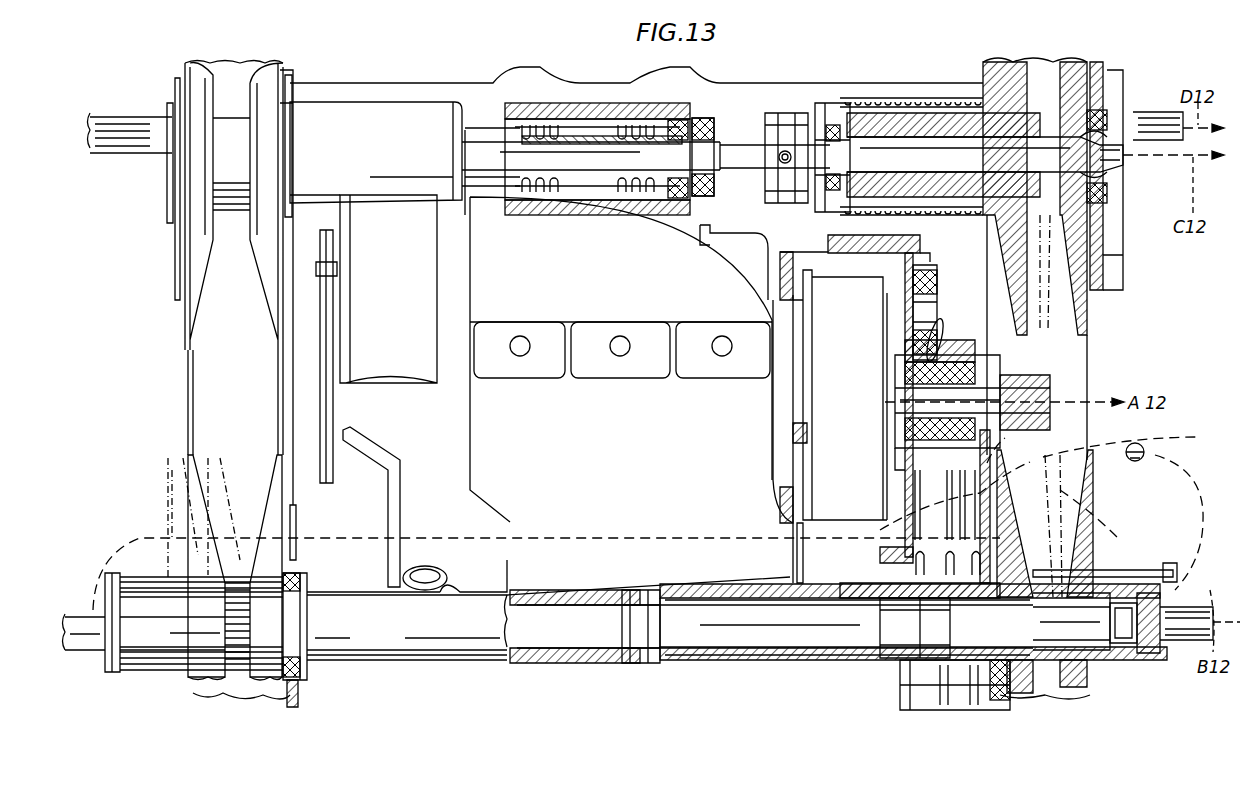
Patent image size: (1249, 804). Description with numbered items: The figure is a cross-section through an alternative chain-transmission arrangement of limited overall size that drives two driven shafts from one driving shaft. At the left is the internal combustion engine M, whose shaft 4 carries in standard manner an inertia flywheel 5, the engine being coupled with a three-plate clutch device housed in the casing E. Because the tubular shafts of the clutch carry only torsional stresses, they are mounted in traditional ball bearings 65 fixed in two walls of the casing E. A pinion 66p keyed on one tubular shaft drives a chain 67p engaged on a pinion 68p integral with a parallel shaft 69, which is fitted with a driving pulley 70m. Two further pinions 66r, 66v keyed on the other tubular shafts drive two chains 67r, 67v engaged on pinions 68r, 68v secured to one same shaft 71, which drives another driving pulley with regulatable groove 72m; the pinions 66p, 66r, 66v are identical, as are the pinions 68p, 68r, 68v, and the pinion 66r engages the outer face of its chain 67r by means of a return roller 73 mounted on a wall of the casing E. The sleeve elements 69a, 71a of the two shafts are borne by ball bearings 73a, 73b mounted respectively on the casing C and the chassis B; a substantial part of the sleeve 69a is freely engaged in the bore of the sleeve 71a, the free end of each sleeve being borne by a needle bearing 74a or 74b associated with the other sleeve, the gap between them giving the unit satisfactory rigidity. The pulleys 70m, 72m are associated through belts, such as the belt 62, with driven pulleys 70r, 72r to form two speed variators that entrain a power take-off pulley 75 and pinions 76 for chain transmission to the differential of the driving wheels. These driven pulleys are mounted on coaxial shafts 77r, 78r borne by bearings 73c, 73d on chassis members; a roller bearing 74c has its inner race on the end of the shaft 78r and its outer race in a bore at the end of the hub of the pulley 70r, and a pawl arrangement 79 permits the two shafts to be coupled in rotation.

The shaft 4 is at (790, 380).
The inertia flywheel 5 is at (815, 398).
The belt 62 is at (164, 562).
The ball bearings 65 is at (958, 368).
The pinion 66p is at (993, 380).
The pinion 66r is at (905, 432).
The pinion 66v is at (972, 450).
The chain 67p is at (990, 448).
The chain 67r is at (898, 470).
The chain 67v is at (983, 503).
The pinion 68p is at (978, 708).
The pinion 68r is at (905, 703).
The pinion 68v is at (950, 708).
The shaft 69 is at (1060, 590).
The sleeve 69a is at (790, 600).
The driven pulley 70r is at (1057, 260).
The driving pulley 70m is at (1056, 694).
The shaft 71 is at (351, 613).
The sleeve 71a is at (610, 593).
The driven pulley 72r is at (237, 278).
The driving pulley with regulatable groove 72m is at (252, 493).
The return roller 73 is at (940, 276).
The ball bearing 73a is at (1000, 692).
The ball bearing 73b is at (312, 585).
The bearing 73c is at (1108, 177).
The bearing 73d is at (703, 192).
The needle bearing 74a is at (940, 632).
The needle bearing 74b is at (640, 665).
The roller bearing 74c is at (835, 122).
The power take-off pulley 75 is at (1123, 213).
The pinions 76 is at (615, 122).
The shaft 77r is at (1011, 156).
The shaft 78r is at (459, 164).
The pawl arrangement 79 is at (790, 103).
The casing E is at (925, 262).
The internal combustion engine M is at (621, 359).
The chassis B is at (296, 532).
The casing C is at (955, 484).